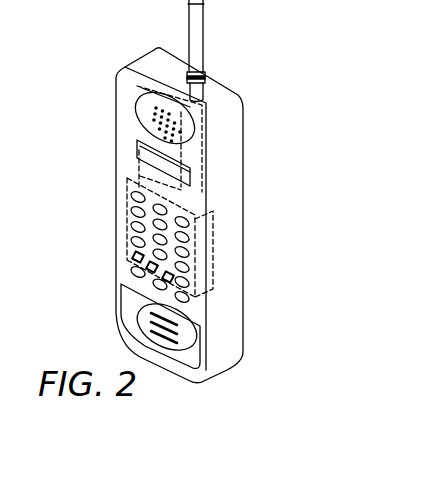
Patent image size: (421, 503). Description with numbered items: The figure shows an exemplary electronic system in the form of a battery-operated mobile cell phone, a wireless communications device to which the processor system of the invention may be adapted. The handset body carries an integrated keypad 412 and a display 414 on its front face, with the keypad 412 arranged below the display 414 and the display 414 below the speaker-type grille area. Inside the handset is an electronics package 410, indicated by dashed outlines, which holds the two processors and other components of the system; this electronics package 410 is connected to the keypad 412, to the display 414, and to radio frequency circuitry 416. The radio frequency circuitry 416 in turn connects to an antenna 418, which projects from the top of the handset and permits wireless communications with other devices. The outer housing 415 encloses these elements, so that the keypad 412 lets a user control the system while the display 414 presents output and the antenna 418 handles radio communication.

The electronics package 410 is at (214, 258).
The integrated keypad 412 is at (135, 229).
The display 414 is at (138, 173).
The housing 415 is at (241, 311).
The radio frequency circuitry 416 is at (140, 138).
The antenna 418 is at (203, 34).